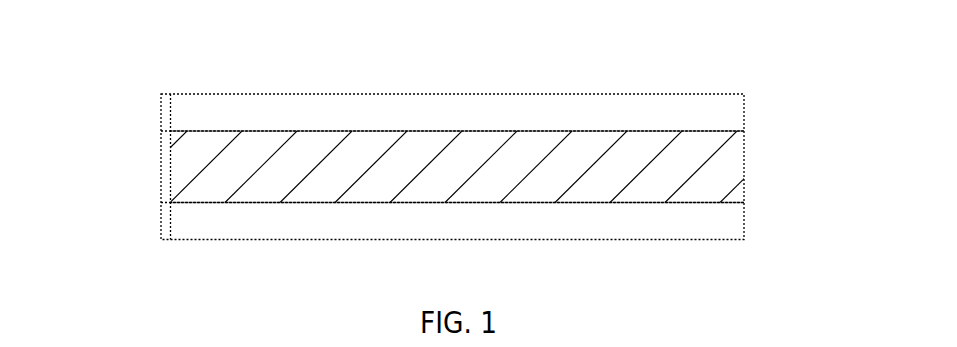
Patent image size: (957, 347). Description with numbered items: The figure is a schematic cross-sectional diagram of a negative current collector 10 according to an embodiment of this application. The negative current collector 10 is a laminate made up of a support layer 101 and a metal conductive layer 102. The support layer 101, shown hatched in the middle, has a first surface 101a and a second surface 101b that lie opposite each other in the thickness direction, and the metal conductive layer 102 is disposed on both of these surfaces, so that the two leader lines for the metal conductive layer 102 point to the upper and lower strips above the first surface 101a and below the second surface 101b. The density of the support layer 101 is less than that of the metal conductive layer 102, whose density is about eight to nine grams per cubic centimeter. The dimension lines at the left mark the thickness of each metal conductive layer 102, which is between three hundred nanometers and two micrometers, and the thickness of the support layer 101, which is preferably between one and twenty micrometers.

The negative current collector 10 is at (466, 28).
The support layer 101 is at (183, 170).
The first surface 101a is at (277, 130).
The second surface 101b is at (283, 202).
The metal conductive layer 102 is at (703, 220).